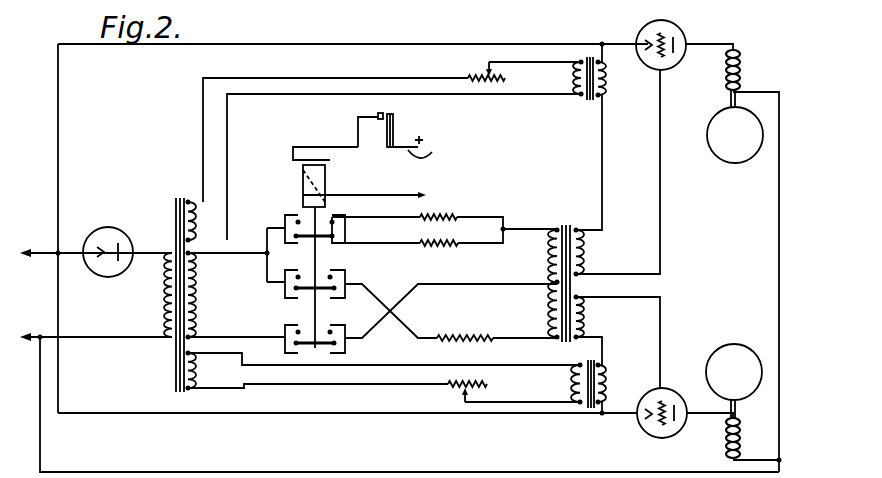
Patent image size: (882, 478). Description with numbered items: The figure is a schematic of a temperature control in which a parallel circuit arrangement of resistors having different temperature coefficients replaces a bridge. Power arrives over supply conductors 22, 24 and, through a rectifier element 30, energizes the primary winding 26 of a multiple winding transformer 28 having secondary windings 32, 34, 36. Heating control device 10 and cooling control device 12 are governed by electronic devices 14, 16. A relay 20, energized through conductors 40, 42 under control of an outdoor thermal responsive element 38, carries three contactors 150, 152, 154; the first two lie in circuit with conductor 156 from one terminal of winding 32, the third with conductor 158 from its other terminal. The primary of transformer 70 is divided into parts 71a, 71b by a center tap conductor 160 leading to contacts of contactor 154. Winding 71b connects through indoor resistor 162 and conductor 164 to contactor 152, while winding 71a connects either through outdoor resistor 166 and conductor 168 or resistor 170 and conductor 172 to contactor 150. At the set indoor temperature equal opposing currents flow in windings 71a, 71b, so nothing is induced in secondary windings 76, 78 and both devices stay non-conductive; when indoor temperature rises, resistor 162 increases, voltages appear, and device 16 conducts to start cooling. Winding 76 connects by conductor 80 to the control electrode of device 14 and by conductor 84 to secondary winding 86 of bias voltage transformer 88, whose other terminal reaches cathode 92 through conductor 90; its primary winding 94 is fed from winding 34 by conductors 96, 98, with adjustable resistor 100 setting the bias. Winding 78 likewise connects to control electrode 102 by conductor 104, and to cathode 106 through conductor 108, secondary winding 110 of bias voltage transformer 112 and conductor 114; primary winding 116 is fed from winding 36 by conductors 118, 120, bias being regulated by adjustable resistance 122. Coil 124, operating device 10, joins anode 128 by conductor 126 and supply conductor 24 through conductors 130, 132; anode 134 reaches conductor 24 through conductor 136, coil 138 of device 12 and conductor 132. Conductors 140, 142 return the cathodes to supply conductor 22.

The control device 10 is at (709, 140).
The control device 12 is at (756, 342).
The electronic device 14 is at (660, 20).
The electronic device 16 is at (667, 438).
The relay 20 is at (298, 188).
The supply conductor 22 is at (40, 258).
The supply conductor 24 is at (38, 334).
The primary winding 26 is at (160, 294).
The multiple winding transformer 28 is at (170, 282).
The voltage source / meter 30 is at (107, 227).
The secondary winding 32 is at (198, 297).
The secondary winding 34 is at (196, 218).
The secondary winding 36 is at (197, 368).
The thermal responsive element 38 is at (394, 128).
The conductor 40 is at (425, 155).
The conductor 42 is at (404, 192).
The transformer 70 is at (567, 275).
The primary winding part 71a is at (548, 258).
The primary winding part 71b is at (544, 310).
The secondary winding 76 is at (585, 249).
The secondary winding 78 is at (586, 310).
The conductor 80 is at (660, 172).
The conductor 84 is at (603, 160).
The secondary winding 86 is at (606, 80).
The bias voltage transformer 88 is at (589, 100).
The conductor 90 is at (603, 42).
The cathode 92 is at (646, 42).
The primary winding 94 is at (573, 75).
The conductor 96 is at (298, 78).
The conductor 98 is at (358, 94).
The adjustable resistor 100 is at (482, 84).
The control electrode 102 is at (644, 421).
The conductor 104 is at (660, 347).
The cathode 106 is at (632, 416).
The conductor 108 is at (605, 413).
The secondary winding 110 is at (606, 384).
The bias voltage transformer 112 is at (589, 362).
The conductor 114 is at (604, 341).
The primary winding 116 is at (571, 388).
The conductor 118 is at (390, 384).
The conductor 120 is at (345, 385).
The adjustable resistance 122 is at (461, 390).
The coil 124 is at (742, 66).
The conductor 126 is at (718, 43).
The anode 128 is at (683, 41).
The conductor 130 is at (778, 222).
The conductor 132 is at (470, 470).
The anode 134 is at (676, 405).
The conductor 136 is at (700, 414).
The coil 138 is at (740, 428).
The conductor 140 is at (310, 44).
The conductor 142 is at (348, 415).
The contactor 150 is at (305, 240).
The contactor 152 is at (308, 292).
The contactor 154 is at (310, 347).
The conductor 156 is at (234, 254).
The conductor 158 is at (228, 326).
The center tap conductor 160 is at (441, 286).
The resistor 162 is at (460, 342).
The conductor 164 is at (375, 289).
The resistor 166 is at (438, 247).
The conductor 168 is at (376, 244).
The resistor 170 is at (447, 214).
The conductor 172 is at (388, 217).